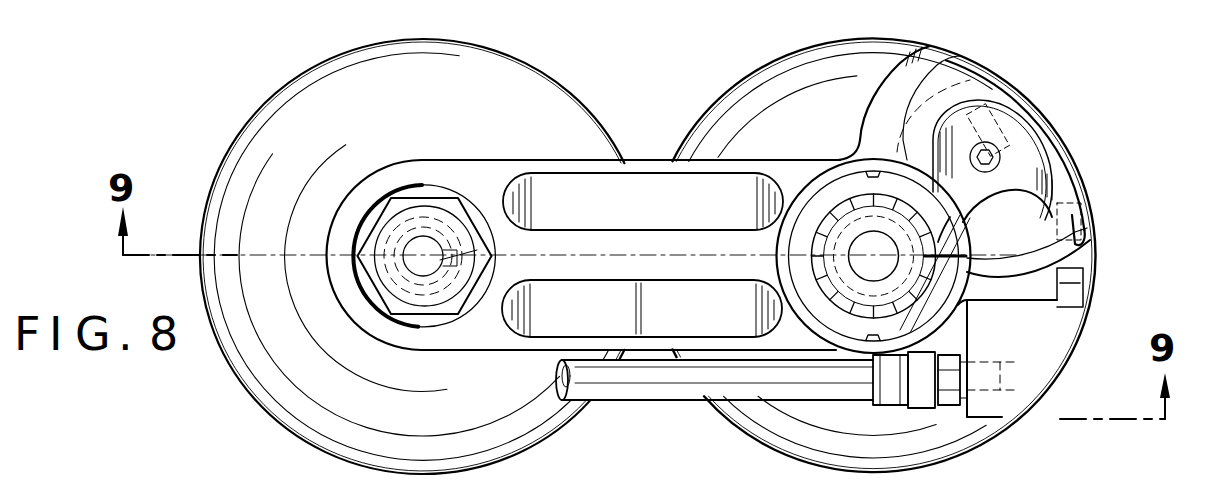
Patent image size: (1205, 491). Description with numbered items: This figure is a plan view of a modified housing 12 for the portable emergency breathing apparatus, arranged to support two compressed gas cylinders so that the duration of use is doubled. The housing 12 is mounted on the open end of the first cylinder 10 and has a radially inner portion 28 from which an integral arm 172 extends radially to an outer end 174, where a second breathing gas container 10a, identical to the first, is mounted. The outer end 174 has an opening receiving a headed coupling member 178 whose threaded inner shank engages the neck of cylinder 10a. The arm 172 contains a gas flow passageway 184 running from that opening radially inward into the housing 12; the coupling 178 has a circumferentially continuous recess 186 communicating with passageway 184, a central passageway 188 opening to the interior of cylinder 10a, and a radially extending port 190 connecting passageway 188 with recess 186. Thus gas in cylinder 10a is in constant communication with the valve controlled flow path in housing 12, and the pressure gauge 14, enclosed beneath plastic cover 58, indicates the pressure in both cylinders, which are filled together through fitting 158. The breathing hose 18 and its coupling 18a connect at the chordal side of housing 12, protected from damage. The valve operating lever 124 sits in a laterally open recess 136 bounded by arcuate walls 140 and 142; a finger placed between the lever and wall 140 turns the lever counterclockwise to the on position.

The cylinder 10 is at (716, 82).
The second breathing gas container 10a is at (553, 63).
The housing 12 is at (1063, 107).
The pressure gauge 14 is at (822, 286).
The breathing hose 18 is at (796, 413).
The coupling 18a is at (990, 418).
The radially inner portion 28 is at (830, 169).
The plastic cover 58 is at (867, 178).
The valve operating lever 124 is at (1035, 168).
The laterally open axially extending recess 136 is at (957, 63).
The arcuate wall 140 is at (1015, 278).
The arcuate wall 142 is at (878, 93).
The fitting 158 is at (1105, 260).
The integral arm 172 is at (646, 146).
The outer end 174 is at (467, 170).
The headed coupling member 178 is at (356, 212).
The gas flow passageway 184 is at (712, 245).
The circumferentially continuous radially inwardly extending recess 186 is at (423, 213).
The central passageway 188 is at (400, 290).
The radially extending port 190 is at (455, 290).